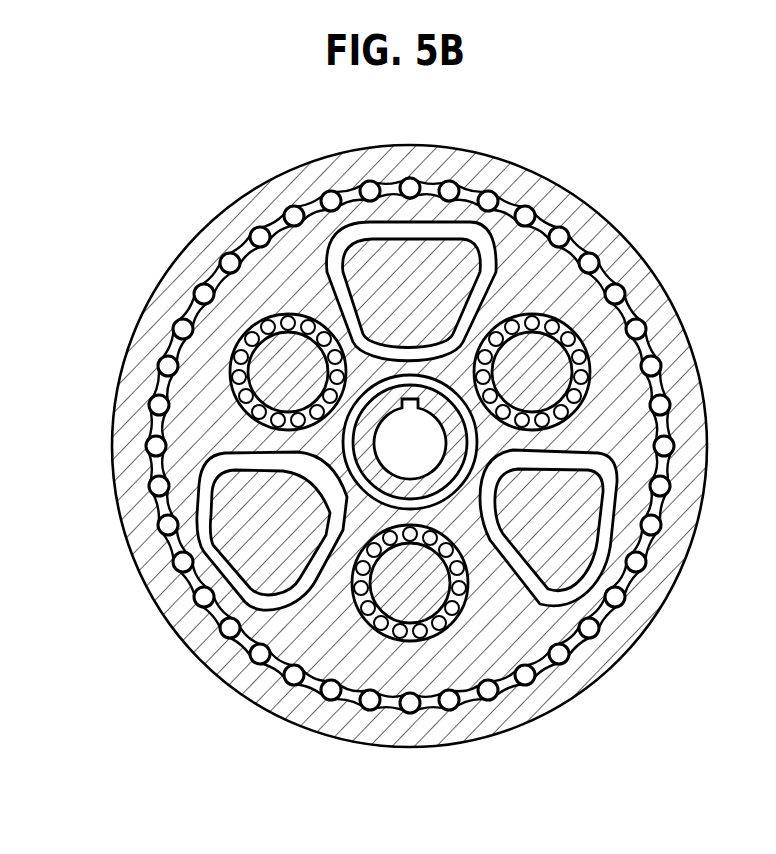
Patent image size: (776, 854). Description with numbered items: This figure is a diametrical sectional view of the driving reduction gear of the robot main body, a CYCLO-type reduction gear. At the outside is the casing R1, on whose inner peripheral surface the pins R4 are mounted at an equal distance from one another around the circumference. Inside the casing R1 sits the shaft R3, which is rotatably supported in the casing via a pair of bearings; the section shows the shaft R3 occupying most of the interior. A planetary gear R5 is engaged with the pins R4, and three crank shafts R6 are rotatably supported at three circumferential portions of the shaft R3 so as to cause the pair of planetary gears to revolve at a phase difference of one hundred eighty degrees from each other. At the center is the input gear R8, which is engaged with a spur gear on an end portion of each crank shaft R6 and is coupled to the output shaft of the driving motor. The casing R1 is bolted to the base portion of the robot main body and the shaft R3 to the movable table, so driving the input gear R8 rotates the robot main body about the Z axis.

The casing R1 is at (274, 190).
The shaft R3 is at (253, 555).
The pins R4 is at (590, 256).
The planetary gear R5 is at (240, 275).
The crank shaft R6 is at (272, 370).
The input gear R8 is at (453, 465).